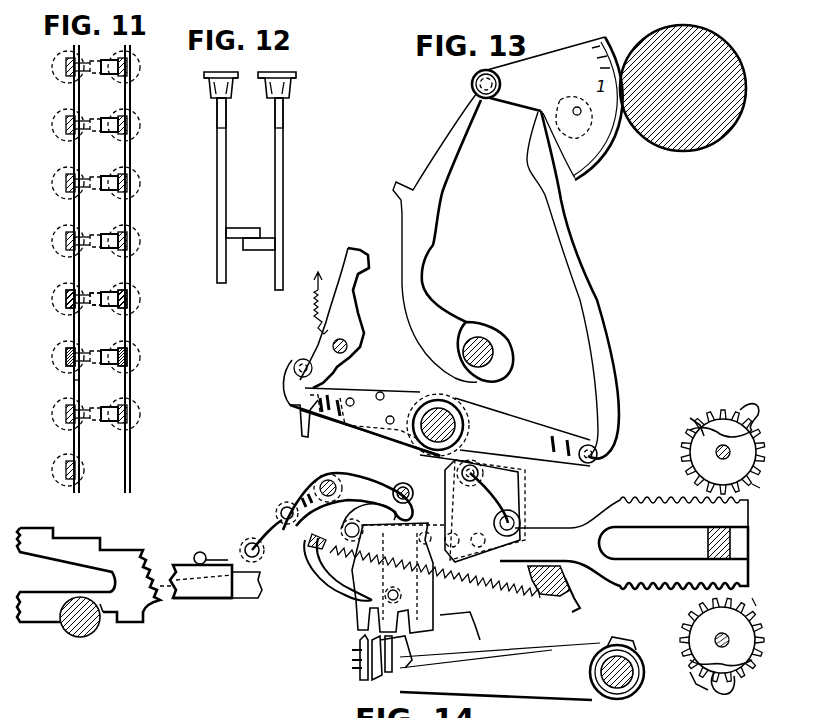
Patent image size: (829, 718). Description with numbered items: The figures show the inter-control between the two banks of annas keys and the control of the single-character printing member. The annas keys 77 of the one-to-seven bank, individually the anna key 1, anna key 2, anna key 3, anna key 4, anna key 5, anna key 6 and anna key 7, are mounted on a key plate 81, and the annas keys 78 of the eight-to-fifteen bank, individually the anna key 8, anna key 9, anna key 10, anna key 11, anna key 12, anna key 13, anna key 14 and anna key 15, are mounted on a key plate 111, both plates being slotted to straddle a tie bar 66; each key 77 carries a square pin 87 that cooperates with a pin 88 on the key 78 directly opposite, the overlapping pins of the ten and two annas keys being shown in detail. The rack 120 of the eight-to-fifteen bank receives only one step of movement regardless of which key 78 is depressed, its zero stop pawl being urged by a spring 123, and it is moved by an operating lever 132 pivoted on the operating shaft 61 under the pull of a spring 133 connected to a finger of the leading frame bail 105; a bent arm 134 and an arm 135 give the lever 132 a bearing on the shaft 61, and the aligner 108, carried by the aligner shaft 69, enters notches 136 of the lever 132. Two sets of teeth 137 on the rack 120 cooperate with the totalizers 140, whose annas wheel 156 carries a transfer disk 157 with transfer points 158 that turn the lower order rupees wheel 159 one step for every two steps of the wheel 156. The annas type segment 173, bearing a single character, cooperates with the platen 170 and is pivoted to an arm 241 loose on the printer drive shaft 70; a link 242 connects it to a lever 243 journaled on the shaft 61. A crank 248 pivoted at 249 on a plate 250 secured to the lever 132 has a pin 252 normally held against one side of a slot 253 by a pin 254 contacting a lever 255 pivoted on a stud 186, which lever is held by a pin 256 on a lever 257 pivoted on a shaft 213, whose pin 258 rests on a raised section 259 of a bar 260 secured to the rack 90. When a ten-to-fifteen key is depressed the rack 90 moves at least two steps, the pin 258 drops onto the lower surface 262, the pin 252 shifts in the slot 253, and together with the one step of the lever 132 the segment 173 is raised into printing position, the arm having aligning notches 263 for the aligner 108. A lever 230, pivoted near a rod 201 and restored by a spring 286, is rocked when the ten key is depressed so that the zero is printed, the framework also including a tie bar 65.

In FIG. 11, the pin position 1 is at (115, 414).
In FIG. 11, the pin 2 is at (115, 357).
In FIG. 12, the pin 2 is at (277, 172).
In FIG. 11, the pin position 3 is at (115, 299).
In FIG. 11, the pin position 4 is at (115, 241).
In FIG. 11, the pin position 5 is at (115, 183).
In FIG. 11, the pin position 6 is at (115, 125).
In FIG. 11, the pin position 7 is at (115, 67).
In FIG. 11, the pin position 8 is at (59, 470).
In FIG. 11, the pin position 9 is at (59, 414).
In FIG. 11, the pin 10 is at (54, 357).
In FIG. 12, the pin 10 is at (221, 168).
In FIG. 11, the pin position 11 is at (54, 299).
In FIG. 11, the pin position 12 is at (54, 241).
In FIG. 11, the pin position 13 is at (54, 183).
In FIG. 11, the pin position 14 is at (54, 125).
In FIG. 11, the pin position 15 is at (54, 67).
In FIG. 13, the operating shaft 61 is at (438, 408).
In FIG. 13, the tie bar 65 is at (732, 547).
In FIG. 13, the tie bar 66 is at (68, 636).
In FIG. 13, the aligner shaft 69 is at (610, 660).
In FIG. 13, the printer drive shaft 70 is at (486, 340).
In FIG. 11, the annas keys 77 is at (130, 352).
In FIG. 12, the annas keys 77 is at (280, 118).
In FIG. 11, the annas keys 78 is at (65, 352).
In FIG. 12, the annas keys 78 is at (222, 116).
In FIG. 11, the key plate 81 is at (128, 443).
In FIG. 11, the square pin 87 is at (112, 232).
In FIG. 12, the square pin 87 is at (268, 248).
In FIG. 11, the pin 88 is at (103, 294).
In FIG. 12, the pin 88 is at (247, 228).
In FIG. 13, the rack 90 is at (244, 590).
In FIG. 13, the leading frame bail 105 is at (572, 596).
In FIG. 13, the aligner 108 is at (358, 654).
In FIG. 11, the key plate 111 is at (73, 385).
In FIG. 13, the rack 120 is at (118, 562).
In FIG. 13, the spring 123 is at (100, 620).
In FIG. 13, the operating lever 132 is at (432, 604).
In FIG. 13, the spring 133 is at (507, 598).
In FIG. 13, the bent arm 134 is at (344, 430).
In FIG. 13, the arm 135 is at (400, 470).
In FIG. 13, the notches 136 is at (366, 608).
In FIG. 13, the teeth 137 is at (740, 522).
In FIG. 13, the totalizers 140 is at (680, 469).
In FIG. 13, the annas wheel 156 is at (771, 542).
In FIG. 13, the transfer disk 157 is at (692, 430).
In FIG. 13, the transfer points 158 is at (724, 410).
In FIG. 13, the lower order rupees wheel 159 is at (700, 418).
In FIG. 13, the platen 170 is at (672, 148).
In FIG. 13, the annas type segment 173 is at (580, 52).
In FIG. 13, the stud 186 is at (322, 482).
In FIG. 13, the rod 201 is at (348, 346).
In FIG. 13, the shaft 213 is at (250, 543).
In FIG. 13, the lever 230 is at (352, 306).
In FIG. 13, the arm 241 is at (430, 190).
In FIG. 13, the link 242 is at (560, 226).
In FIG. 13, the lever 243 is at (541, 440).
In FIG. 13, the crank 248 is at (466, 446).
In FIG. 13, the pivot 249 is at (482, 472).
In FIG. 13, the plate 250 is at (512, 492).
In FIG. 13, the pin 252 is at (514, 536).
In FIG. 13, the slot 253 is at (516, 514).
In FIG. 13, the pin 254 is at (419, 502).
In FIG. 13, the lever 255 is at (368, 519).
In FIG. 13, the pin 256 is at (284, 506).
In FIG. 13, the lever 257 is at (282, 583).
In FIG. 13, the pin 258 is at (198, 552).
In FIG. 13, the raised section 259 is at (226, 558).
In FIG. 13, the bar 260 is at (180, 597).
In FIG. 13, the lower surface 262 is at (196, 570).
In FIG. 13, the aligning notches 263 is at (400, 630).
In FIG. 13, the spring 286 is at (312, 314).